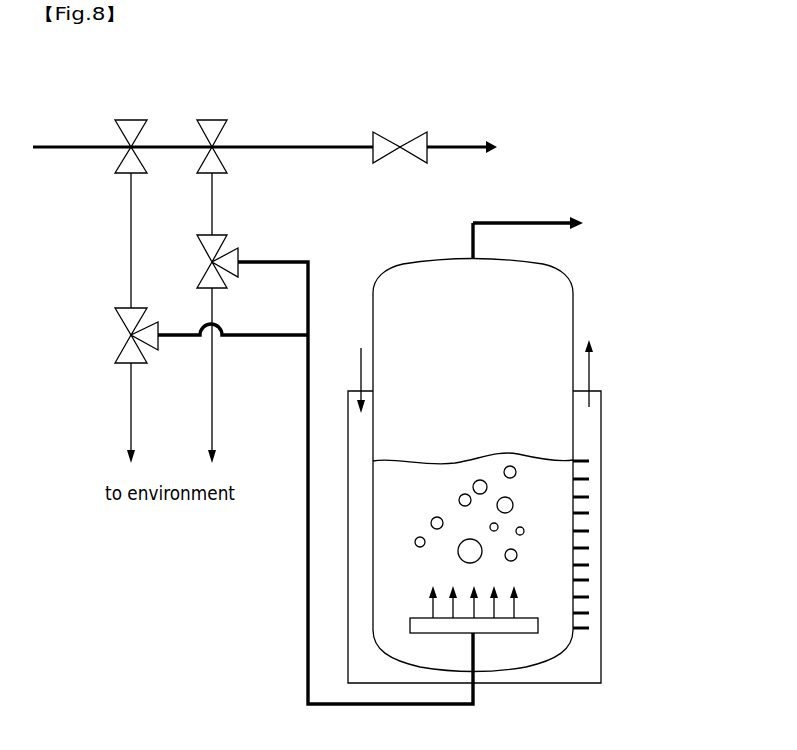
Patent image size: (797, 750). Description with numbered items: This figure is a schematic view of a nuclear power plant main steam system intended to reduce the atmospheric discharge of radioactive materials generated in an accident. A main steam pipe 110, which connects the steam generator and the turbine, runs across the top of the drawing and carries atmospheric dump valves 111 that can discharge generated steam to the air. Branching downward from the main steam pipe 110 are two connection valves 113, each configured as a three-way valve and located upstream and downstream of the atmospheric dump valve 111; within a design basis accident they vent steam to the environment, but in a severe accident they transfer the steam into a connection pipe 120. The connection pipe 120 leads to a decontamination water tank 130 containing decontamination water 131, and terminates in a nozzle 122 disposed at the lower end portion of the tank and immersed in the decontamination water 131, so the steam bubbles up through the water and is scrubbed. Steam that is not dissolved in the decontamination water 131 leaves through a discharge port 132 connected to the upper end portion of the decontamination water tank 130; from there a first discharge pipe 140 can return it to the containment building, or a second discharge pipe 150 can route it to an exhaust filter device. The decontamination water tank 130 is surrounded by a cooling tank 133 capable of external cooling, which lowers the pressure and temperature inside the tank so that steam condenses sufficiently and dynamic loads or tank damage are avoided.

The main steam pipe 110 is at (58, 146).
The atmospheric dump valve 111 is at (130, 120).
The connection valve 113 is at (232, 250).
The connection pipe 120 is at (306, 598).
The nozzle 122 is at (505, 634).
The decontamination water tank 130 is at (568, 283).
The decontamination water 131 is at (545, 640).
The discharge port 132 is at (473, 262).
The cooling tank 133 is at (590, 524).
The first discharge pipe 140 is at (528, 198).
The second discharge pipe 150 is at (510, 222).